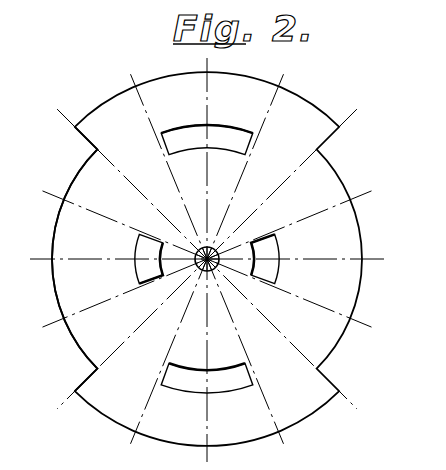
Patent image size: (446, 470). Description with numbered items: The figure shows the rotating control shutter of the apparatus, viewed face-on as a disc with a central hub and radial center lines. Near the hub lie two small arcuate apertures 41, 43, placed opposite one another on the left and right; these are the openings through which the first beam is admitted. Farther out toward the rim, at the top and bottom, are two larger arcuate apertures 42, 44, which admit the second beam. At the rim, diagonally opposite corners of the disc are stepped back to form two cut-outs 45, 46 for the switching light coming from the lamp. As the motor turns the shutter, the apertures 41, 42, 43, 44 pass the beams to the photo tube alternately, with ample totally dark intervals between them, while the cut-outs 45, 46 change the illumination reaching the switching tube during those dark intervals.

The aperture 41 is at (140, 265).
The aperture 42 is at (214, 131).
The aperture 43 is at (280, 238).
The aperture 44 is at (229, 382).
The cut-out 45 is at (326, 159).
The cut-out 46 is at (69, 193).